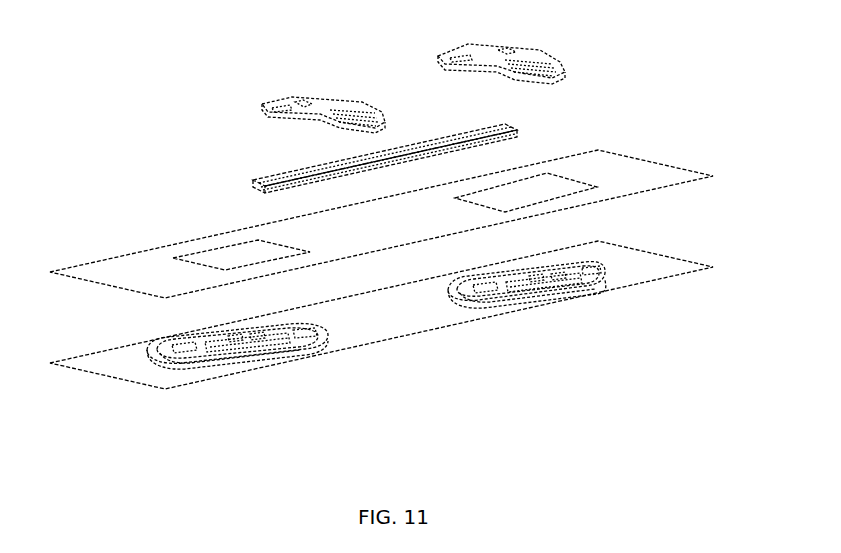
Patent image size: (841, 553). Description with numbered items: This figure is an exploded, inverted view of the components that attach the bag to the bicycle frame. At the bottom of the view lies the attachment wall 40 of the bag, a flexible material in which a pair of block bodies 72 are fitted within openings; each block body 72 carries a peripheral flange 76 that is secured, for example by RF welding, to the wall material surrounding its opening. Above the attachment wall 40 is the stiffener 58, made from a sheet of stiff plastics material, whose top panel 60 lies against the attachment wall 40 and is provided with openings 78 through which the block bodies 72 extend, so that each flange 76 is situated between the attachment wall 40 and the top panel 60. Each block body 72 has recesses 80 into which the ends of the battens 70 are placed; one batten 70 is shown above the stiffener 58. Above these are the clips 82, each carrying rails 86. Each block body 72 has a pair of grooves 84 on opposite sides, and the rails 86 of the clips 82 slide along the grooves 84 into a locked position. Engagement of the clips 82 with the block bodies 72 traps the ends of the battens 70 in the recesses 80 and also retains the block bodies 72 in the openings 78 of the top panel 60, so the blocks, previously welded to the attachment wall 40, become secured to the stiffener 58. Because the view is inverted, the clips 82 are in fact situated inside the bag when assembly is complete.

The attachment wall 40 is at (646, 272).
The stiffener 58 is at (668, 153).
The top panel 60 is at (118, 273).
The batten 70 is at (420, 142).
The block body 72 is at (228, 360).
The peripheral flange 76 is at (163, 347).
The opening 78 is at (213, 250).
The recess 80 is at (203, 348).
The clip 82 is at (322, 98).
The groove 84 is at (228, 332).
The rail 86 is at (298, 100).